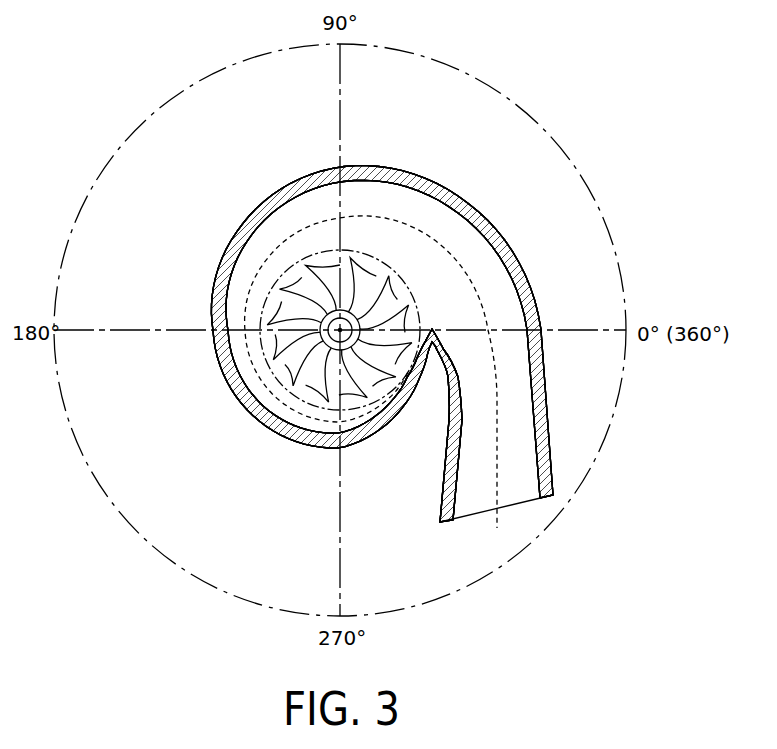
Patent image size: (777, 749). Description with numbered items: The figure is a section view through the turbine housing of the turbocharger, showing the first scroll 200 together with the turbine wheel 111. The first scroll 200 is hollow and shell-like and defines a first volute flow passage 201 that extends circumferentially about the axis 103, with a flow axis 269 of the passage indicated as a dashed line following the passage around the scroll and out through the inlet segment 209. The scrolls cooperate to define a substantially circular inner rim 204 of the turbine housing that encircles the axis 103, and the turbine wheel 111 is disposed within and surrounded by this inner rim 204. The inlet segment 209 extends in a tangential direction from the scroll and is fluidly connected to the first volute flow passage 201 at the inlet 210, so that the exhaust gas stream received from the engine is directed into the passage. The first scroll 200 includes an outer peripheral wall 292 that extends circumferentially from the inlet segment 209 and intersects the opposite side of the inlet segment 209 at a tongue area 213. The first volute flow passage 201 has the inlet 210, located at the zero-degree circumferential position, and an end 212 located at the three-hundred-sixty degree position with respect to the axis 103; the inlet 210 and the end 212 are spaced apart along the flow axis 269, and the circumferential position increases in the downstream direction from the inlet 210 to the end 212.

The first scroll 200 is at (492, 160).
The first volute flow passage 201 is at (425, 215).
The outer peripheral wall 292 is at (371, 169).
The inner rim 204 is at (355, 250).
The inlet segment 209 is at (545, 374).
The inlet 210 is at (528, 332).
The end 212 is at (432, 329).
The tongue area 213 is at (433, 343).
The flow axis 269 is at (497, 520).
The turbine wheel 111 is at (295, 288).
The axis 103 is at (315, 325).